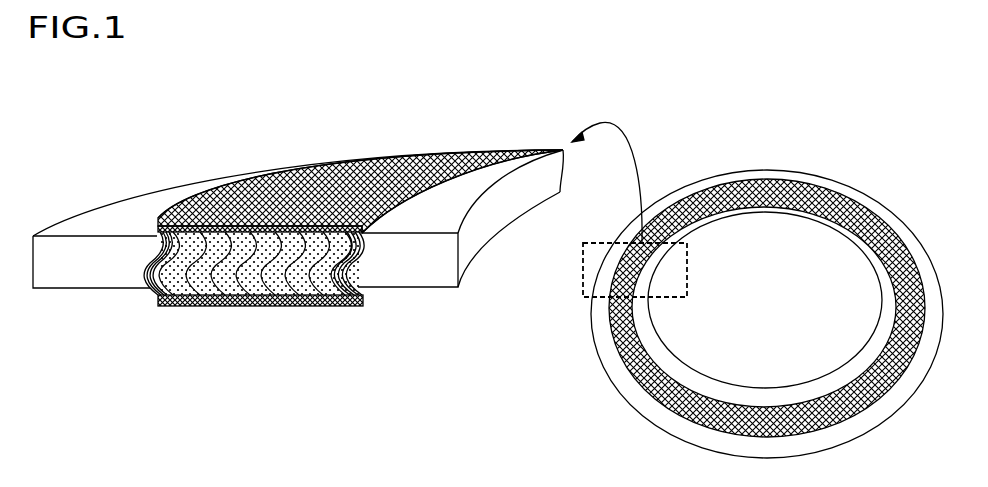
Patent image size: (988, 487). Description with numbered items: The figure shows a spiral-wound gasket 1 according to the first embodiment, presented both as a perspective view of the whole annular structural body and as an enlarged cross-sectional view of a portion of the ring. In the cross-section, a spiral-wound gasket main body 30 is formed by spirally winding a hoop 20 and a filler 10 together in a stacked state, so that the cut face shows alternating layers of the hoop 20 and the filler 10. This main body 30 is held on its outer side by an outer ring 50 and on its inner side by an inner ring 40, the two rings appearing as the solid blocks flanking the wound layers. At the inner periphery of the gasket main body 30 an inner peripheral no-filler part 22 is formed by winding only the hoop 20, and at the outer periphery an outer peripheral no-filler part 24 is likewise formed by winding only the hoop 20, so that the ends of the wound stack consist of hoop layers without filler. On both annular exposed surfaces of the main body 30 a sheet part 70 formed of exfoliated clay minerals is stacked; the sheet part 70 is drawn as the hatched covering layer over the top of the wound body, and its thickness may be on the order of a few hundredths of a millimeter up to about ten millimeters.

The spiral-wound gasket 1 is at (866, 173).
The filler 10 is at (333, 300).
The hoop 20 is at (207, 298).
The inner peripheral no-filler part 22 is at (352, 283).
The outer peripheral no-filler part 24 is at (150, 284).
The spiral-wound gasket main body 30 is at (212, 375).
The inner ring 40 is at (420, 265).
The outer ring 50 is at (85, 265).
The sheet part 70 is at (433, 148).